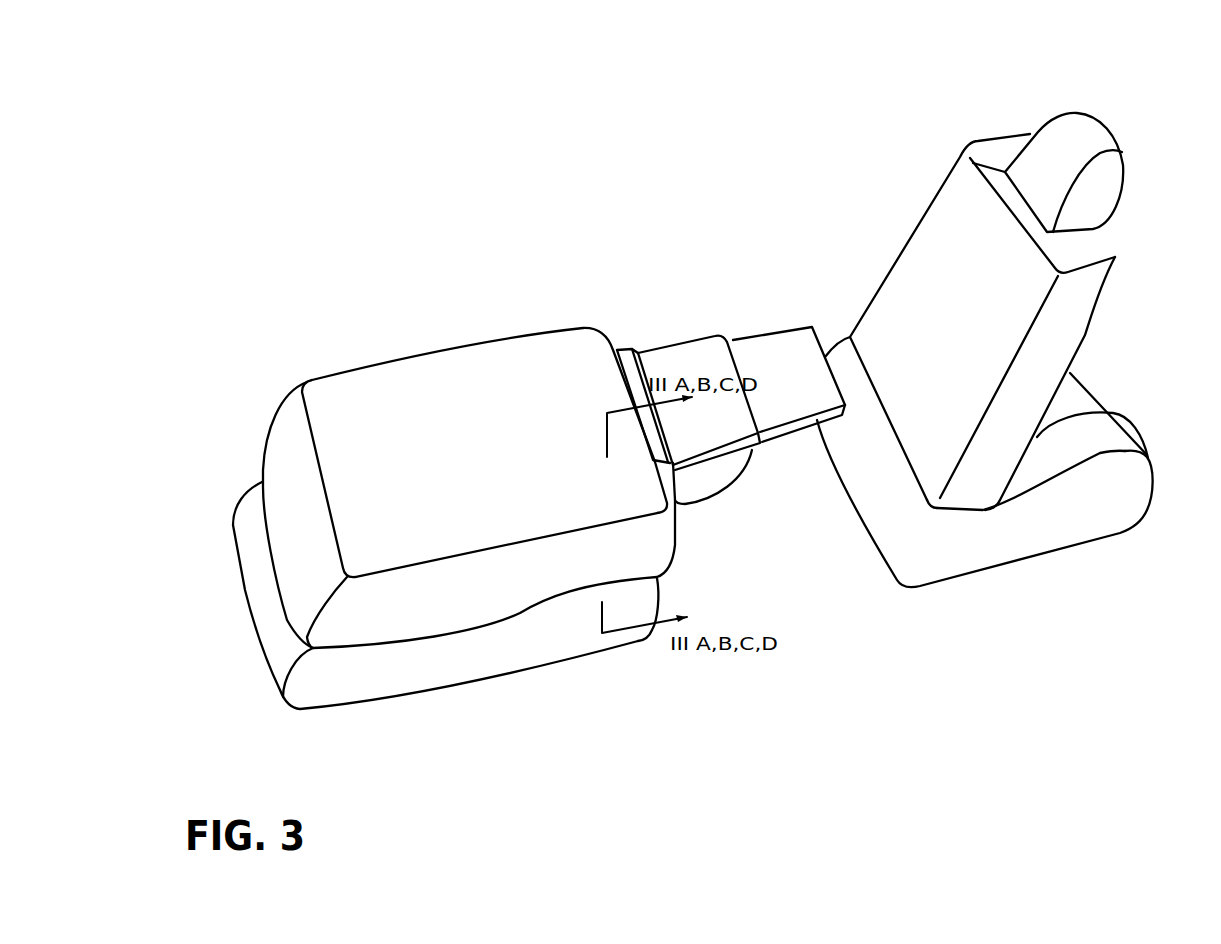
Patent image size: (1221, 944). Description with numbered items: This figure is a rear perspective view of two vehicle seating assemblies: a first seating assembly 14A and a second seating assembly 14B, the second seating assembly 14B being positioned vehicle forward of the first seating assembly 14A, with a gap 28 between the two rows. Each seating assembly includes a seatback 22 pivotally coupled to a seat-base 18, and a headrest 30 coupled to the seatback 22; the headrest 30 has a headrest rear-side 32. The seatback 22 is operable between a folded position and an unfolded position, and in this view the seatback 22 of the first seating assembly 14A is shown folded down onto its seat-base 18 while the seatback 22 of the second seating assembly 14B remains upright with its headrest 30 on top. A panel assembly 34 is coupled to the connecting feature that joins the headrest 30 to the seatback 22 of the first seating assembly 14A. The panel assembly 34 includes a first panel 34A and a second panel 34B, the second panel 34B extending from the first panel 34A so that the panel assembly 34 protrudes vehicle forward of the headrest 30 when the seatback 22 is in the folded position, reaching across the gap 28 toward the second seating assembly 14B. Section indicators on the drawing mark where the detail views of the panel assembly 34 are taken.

The first seating assembly 14A is at (395, 305).
The second seating assembly 14B is at (1152, 143).
The seat-base 18 is at (535, 657).
The seatback 22 is at (448, 470).
The gap 28 is at (788, 548).
The headrest 30 is at (1056, 186).
The headrest rear-side 32 is at (1033, 156).
The panel assembly 34 is at (720, 337).
The first panel 34A is at (660, 360).
The second panel 34B is at (773, 360).